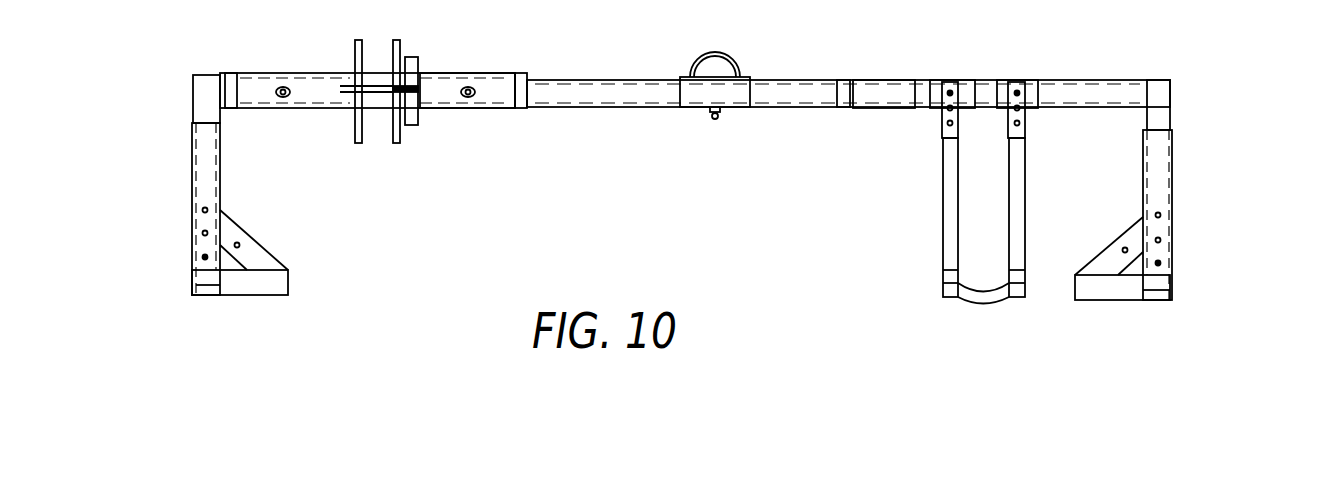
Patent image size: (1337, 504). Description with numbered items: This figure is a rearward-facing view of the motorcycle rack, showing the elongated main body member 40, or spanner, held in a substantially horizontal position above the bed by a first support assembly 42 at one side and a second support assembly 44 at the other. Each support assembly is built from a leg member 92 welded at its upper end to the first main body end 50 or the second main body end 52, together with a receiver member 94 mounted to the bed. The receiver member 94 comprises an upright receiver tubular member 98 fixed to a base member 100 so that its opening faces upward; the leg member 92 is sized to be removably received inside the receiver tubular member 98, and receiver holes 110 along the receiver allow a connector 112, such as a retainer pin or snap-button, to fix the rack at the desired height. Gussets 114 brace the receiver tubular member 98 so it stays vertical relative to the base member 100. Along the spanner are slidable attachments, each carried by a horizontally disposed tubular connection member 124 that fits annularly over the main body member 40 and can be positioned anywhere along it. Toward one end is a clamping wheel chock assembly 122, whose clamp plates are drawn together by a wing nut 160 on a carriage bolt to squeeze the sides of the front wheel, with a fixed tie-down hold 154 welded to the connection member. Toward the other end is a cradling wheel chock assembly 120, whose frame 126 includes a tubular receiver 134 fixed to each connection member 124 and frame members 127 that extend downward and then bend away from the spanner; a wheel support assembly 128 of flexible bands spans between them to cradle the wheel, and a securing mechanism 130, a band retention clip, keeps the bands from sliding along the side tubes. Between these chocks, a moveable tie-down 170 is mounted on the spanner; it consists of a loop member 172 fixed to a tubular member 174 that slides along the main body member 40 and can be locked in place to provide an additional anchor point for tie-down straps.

The main body member 40 is at (600, 80).
The first support assembly 42 is at (212, 195).
The second support assembly 44 is at (1192, 237).
The first main body end 50 is at (222, 72).
The second main body end 52 is at (1142, 80).
The leg member 92 is at (193, 95).
The receiver member 94 is at (190, 183).
The receiver tubular member 98 is at (1160, 185).
The base member 100 is at (1115, 290).
The receiver holes 110 is at (1160, 240).
The connector 112 is at (200, 256).
The gussets 114 is at (250, 262).
The cradling wheel chock assembly 120 is at (974, 225).
The clamping wheel chock assembly 122 is at (382, 160).
The tubular connection member 124 is at (497, 80).
The frame 126 is at (1013, 190).
The frame members 127 is at (942, 186).
The wheel support assembly 128 is at (968, 298).
The securing mechanism 130 is at (1015, 282).
The tubular receiver 134 is at (940, 128).
The fixed tie-down hold 154 is at (232, 72).
The wing nut 160 is at (413, 60).
The moveable tie-down 170 is at (745, 75).
The loop member 172 is at (700, 62).
The tubular member 174 is at (700, 103).